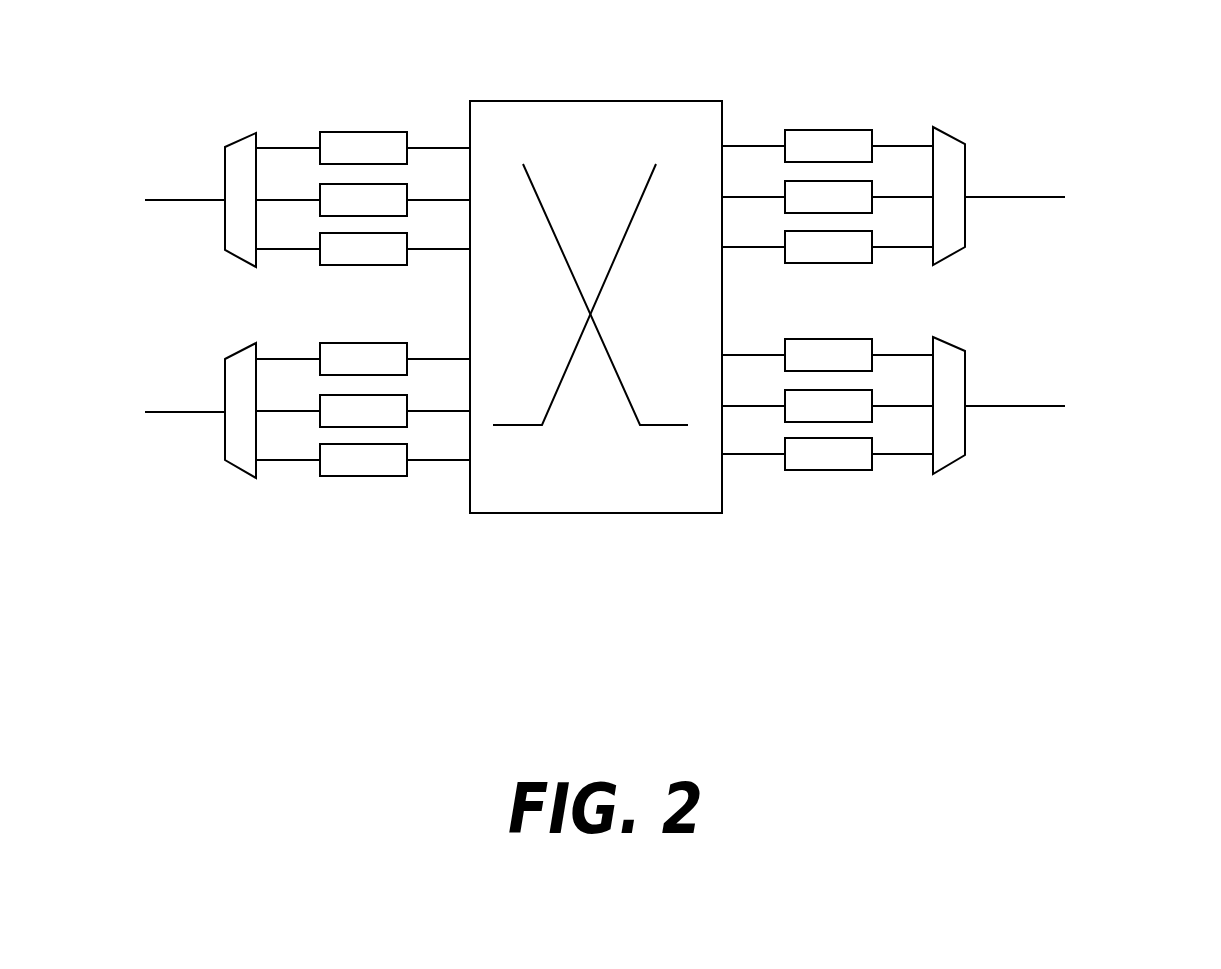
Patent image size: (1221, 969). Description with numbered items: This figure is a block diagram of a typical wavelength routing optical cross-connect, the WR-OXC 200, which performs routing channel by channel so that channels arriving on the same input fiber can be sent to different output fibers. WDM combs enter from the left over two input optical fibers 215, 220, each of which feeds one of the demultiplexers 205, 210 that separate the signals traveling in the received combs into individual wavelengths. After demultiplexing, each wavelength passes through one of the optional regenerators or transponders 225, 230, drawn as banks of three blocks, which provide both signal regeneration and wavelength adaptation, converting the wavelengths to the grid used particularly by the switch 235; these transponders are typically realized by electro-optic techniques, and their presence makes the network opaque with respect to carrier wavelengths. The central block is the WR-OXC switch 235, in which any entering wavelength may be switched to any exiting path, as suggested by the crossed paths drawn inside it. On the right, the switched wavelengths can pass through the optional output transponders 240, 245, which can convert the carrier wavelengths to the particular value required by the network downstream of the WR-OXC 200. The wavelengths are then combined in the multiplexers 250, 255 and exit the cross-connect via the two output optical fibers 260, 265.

The WR-OXC 200 is at (838, 638).
The demultiplexer 205 is at (245, 133).
The demultiplexer 210 is at (245, 468).
The optical fiber 215 is at (193, 200).
The optical fiber 220 is at (178, 413).
The 3R regenerator or transponder 225 is at (377, 132).
The 3R regenerator or transponder 230 is at (362, 480).
The WR-OXC switch 235 is at (672, 101).
The output transponder 240 is at (828, 128).
The output transponder 245 is at (831, 476).
The multiplexer 250 is at (942, 125).
The multiplexer 255 is at (962, 465).
The optical fiber 260 is at (1027, 190).
The optical fiber 265 is at (1027, 398).